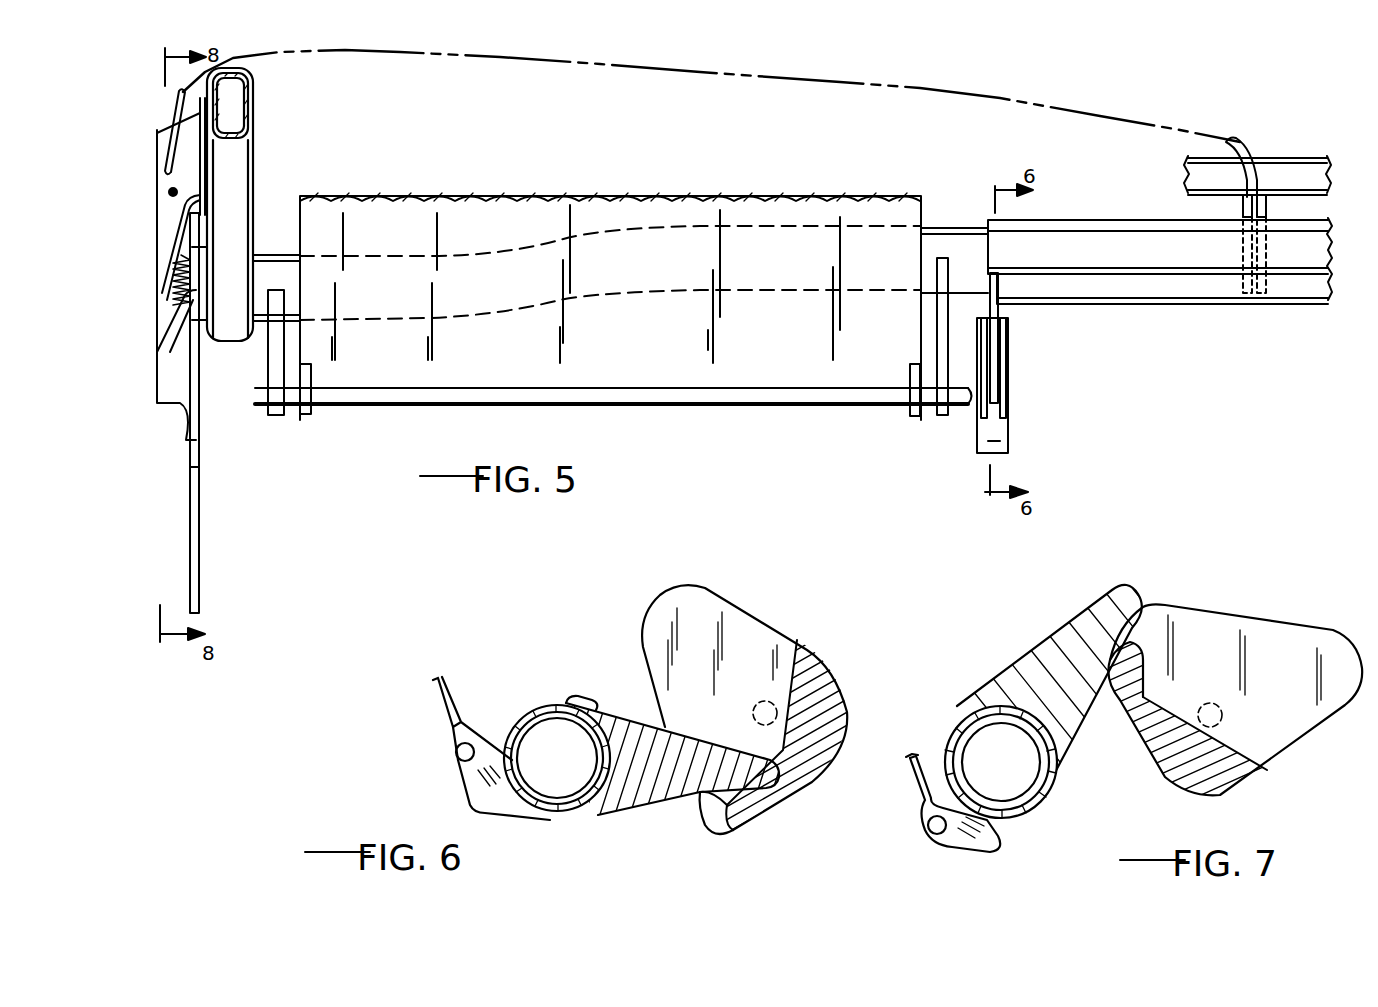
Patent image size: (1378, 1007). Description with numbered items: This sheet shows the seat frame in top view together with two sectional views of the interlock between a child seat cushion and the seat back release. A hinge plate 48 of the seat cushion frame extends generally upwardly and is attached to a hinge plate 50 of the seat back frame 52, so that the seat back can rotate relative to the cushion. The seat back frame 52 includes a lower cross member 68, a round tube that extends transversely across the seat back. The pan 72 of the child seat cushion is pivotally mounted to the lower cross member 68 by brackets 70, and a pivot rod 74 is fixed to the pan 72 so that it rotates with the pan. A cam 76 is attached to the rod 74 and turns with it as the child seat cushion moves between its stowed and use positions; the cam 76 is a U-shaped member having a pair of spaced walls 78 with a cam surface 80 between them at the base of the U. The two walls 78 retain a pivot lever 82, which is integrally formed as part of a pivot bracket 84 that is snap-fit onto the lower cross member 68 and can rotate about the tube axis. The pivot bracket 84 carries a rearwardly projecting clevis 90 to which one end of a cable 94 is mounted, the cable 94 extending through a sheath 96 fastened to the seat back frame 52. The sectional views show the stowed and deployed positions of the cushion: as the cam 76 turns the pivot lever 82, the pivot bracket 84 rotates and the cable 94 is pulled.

In FIG. 5, the hinge plate 48 is at (199, 522).
In FIG. 5, the hinge plate 50 is at (168, 378).
In FIG. 5, the seat back frame 52 is at (262, 148).
In FIG. 5, the lower cross member 68 is at (953, 227).
In FIG. 6, the lower cross member 68 is at (521, 725).
In FIG. 7, the lower cross member 68 is at (946, 748).
In FIG. 5, the brackets 70 is at (270, 373).
In FIG. 5, the pan 72 is at (578, 192).
In FIG. 5, the pivot rod 74 is at (712, 406).
In FIG. 5, the cam 76 is at (1010, 440).
In FIG. 6, the cam 76 is at (838, 665).
In FIG. 7, the cam 76 is at (1186, 797).
In FIG. 5, the spaced walls 78 is at (997, 305).
In FIG. 6, the spaced walls 78 is at (742, 630).
In FIG. 7, the spaced walls 78 is at (1287, 655).
In FIG. 6, the cam surface 80 is at (690, 802).
In FIG. 7, the cam surface 80 is at (1177, 618).
In FIG. 5, the pivot lever 82 is at (996, 372).
In FIG. 6, the pivot lever 82 is at (637, 793).
In FIG. 7, the pivot lever 82 is at (1037, 648).
In FIG. 5, the pivot bracket 84 is at (1188, 287).
In FIG. 6, the pivot bracket 84 is at (586, 703).
In FIG. 6, the clevis 90 is at (470, 778).
In FIG. 7, the clevis 90 is at (1013, 833).
In FIG. 5, the cable 94 is at (1112, 110).
In FIG. 7, the cable 94 is at (908, 762).
In FIG. 5, the sheath 96 is at (1243, 150).